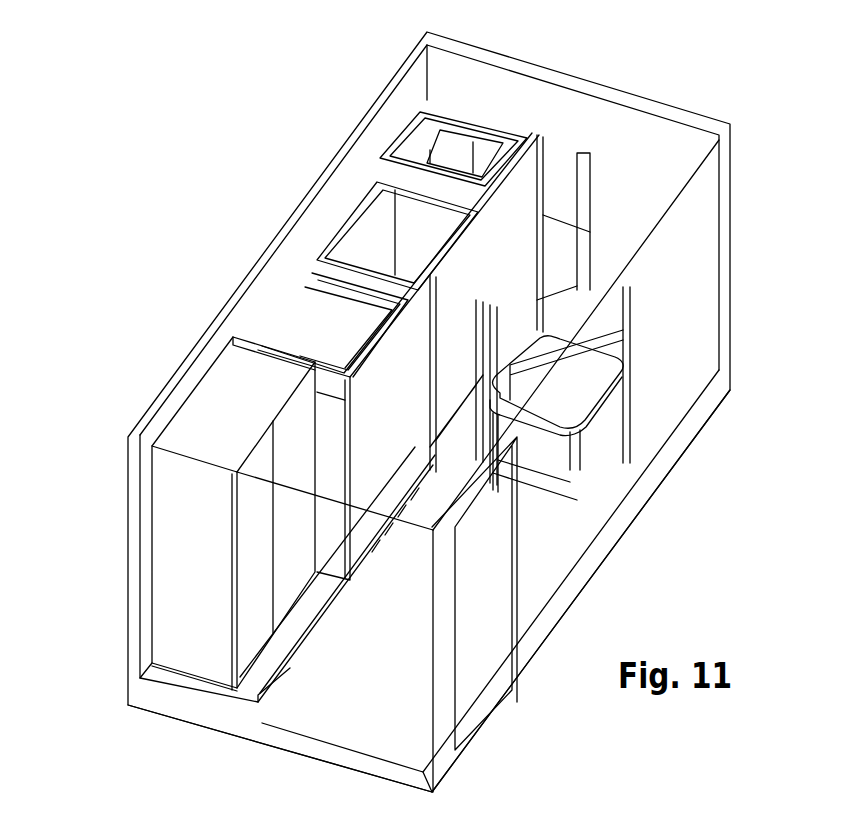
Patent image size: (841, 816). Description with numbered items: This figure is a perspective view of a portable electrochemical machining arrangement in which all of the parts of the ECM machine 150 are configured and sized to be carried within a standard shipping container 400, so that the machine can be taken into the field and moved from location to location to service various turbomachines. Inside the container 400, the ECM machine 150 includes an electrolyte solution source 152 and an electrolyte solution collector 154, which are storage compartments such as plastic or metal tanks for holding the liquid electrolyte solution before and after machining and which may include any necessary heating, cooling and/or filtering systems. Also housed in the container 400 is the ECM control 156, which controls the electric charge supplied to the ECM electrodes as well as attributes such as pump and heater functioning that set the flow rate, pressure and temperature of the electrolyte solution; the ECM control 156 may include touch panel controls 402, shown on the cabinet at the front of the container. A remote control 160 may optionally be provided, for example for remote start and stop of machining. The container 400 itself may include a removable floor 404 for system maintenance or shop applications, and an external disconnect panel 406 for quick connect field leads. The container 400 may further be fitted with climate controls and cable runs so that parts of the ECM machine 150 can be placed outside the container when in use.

The shipping container 400 is at (740, 156).
The touch panel controls 402 is at (248, 509).
The removable floor 404 is at (240, 716).
The external disconnect panel 406 is at (625, 320).
The ECM machine 150 is at (398, 168).
The electrolyte solution source 152 is at (390, 228).
The electrolyte solution collector 154 is at (317, 332).
The ECM control 156 is at (227, 412).
The remote control 160 is at (490, 581).